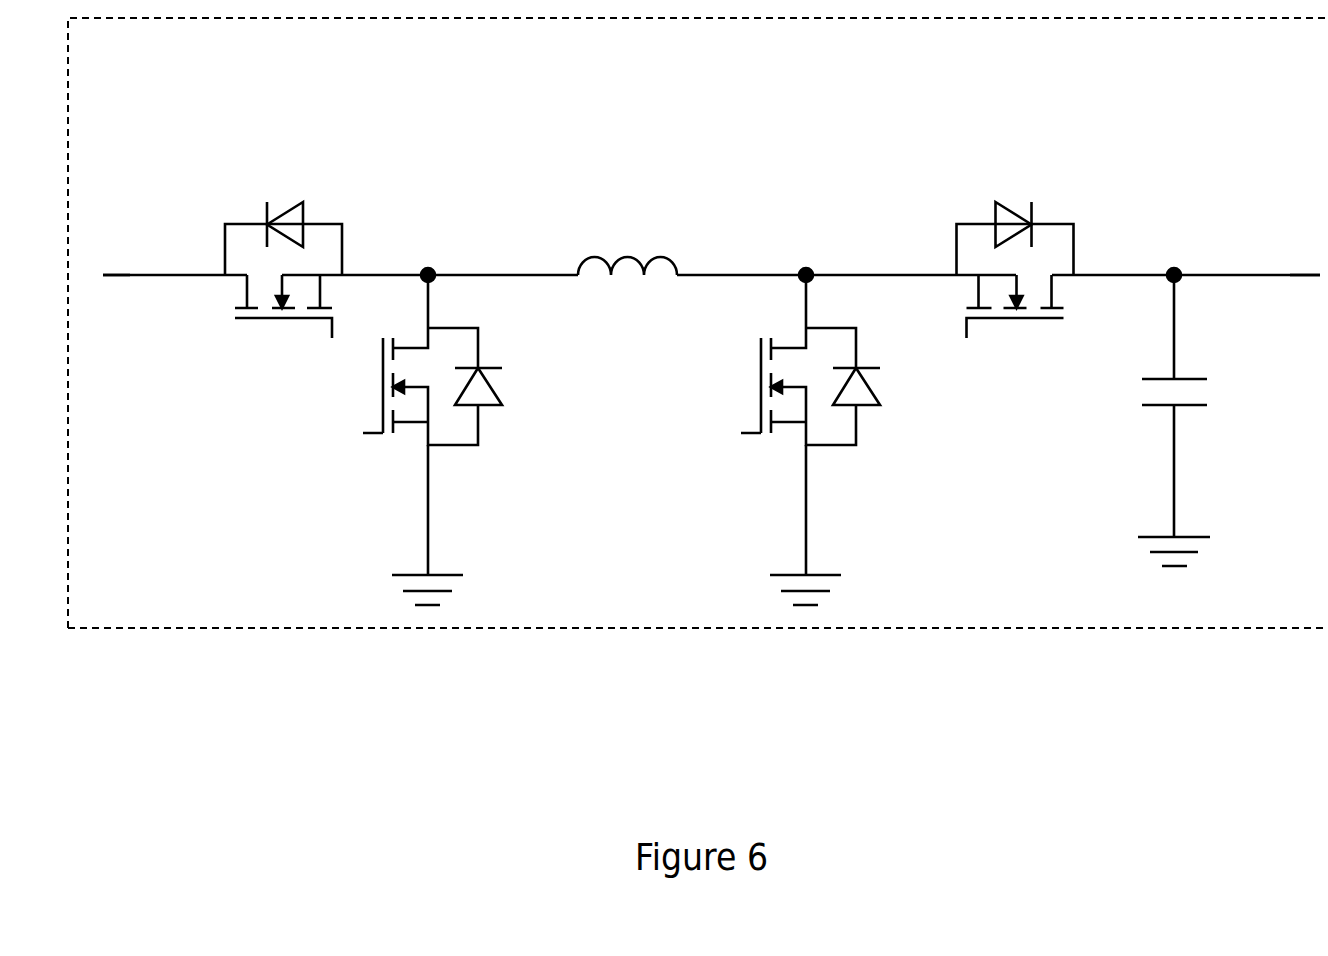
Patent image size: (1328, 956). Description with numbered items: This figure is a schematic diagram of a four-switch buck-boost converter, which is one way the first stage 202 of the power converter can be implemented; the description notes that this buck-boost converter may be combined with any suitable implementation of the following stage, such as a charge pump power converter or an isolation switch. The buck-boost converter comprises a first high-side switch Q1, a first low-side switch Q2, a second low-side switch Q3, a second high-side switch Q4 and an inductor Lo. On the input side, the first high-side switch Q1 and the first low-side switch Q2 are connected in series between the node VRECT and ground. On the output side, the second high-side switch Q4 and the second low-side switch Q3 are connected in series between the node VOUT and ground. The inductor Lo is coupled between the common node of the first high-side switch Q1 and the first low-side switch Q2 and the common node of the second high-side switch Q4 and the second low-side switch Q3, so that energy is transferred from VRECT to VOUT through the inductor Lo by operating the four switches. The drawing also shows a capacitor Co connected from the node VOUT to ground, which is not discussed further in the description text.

The first stage 202 is at (1322, 617).
The first high-side switch Q1 is at (283, 284).
The first low-side switch Q2 is at (419, 443).
The second low-side switch Q3 is at (797, 443).
The second high-side switch Q4 is at (1015, 285).
The inductor Lo is at (627, 247).
The output capacitor Co is at (1195, 424).
The element VRECT is at (138, 258).
The element VOUT is at (1283, 258).